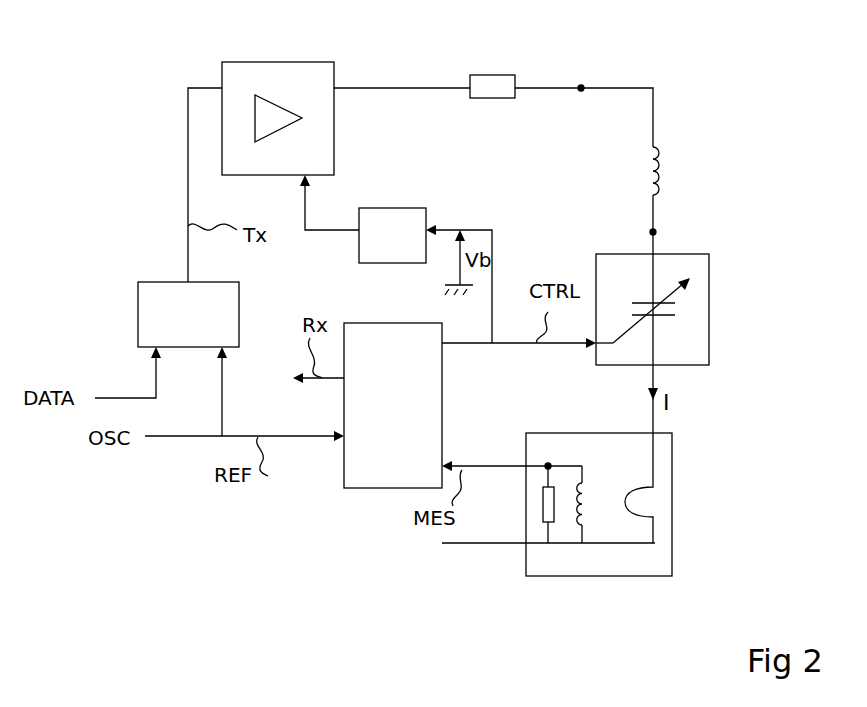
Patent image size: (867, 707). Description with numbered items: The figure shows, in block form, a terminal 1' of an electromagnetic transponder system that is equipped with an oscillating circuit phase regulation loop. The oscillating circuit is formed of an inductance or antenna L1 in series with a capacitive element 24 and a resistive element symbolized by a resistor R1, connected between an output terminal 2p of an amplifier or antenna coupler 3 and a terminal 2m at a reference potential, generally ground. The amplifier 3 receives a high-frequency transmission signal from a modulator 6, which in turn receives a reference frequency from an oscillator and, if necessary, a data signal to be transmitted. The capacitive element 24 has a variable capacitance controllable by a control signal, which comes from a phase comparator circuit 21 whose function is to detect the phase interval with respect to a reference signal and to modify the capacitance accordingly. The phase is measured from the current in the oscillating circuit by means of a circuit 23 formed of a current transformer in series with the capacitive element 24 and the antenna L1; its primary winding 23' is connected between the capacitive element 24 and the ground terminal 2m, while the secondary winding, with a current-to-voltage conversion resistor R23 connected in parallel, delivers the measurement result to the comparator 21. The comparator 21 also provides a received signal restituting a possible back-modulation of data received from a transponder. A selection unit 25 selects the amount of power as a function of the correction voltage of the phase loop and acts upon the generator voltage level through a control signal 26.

The terminal 1' is at (200, 615).
The output terminal 2p is at (393, 86).
The terminal at a reference potential 2m is at (465, 545).
The amplifier or antenna coupler 3 is at (334, 143).
The modulator 6 is at (239, 290).
The phase comparator circuit 21 is at (385, 323).
The current transformer circuit 23 is at (592, 504).
The primary winding 23' is at (647, 488).
The capacitive element 24 is at (709, 328).
The selection unit 25 is at (406, 208).
The control signal 26 is at (305, 197).
The resistor R1 is at (561, 111).
The inductance or antenna L1 is at (674, 200).
The current-to-voltage conversion resistor R23 is at (543, 505).